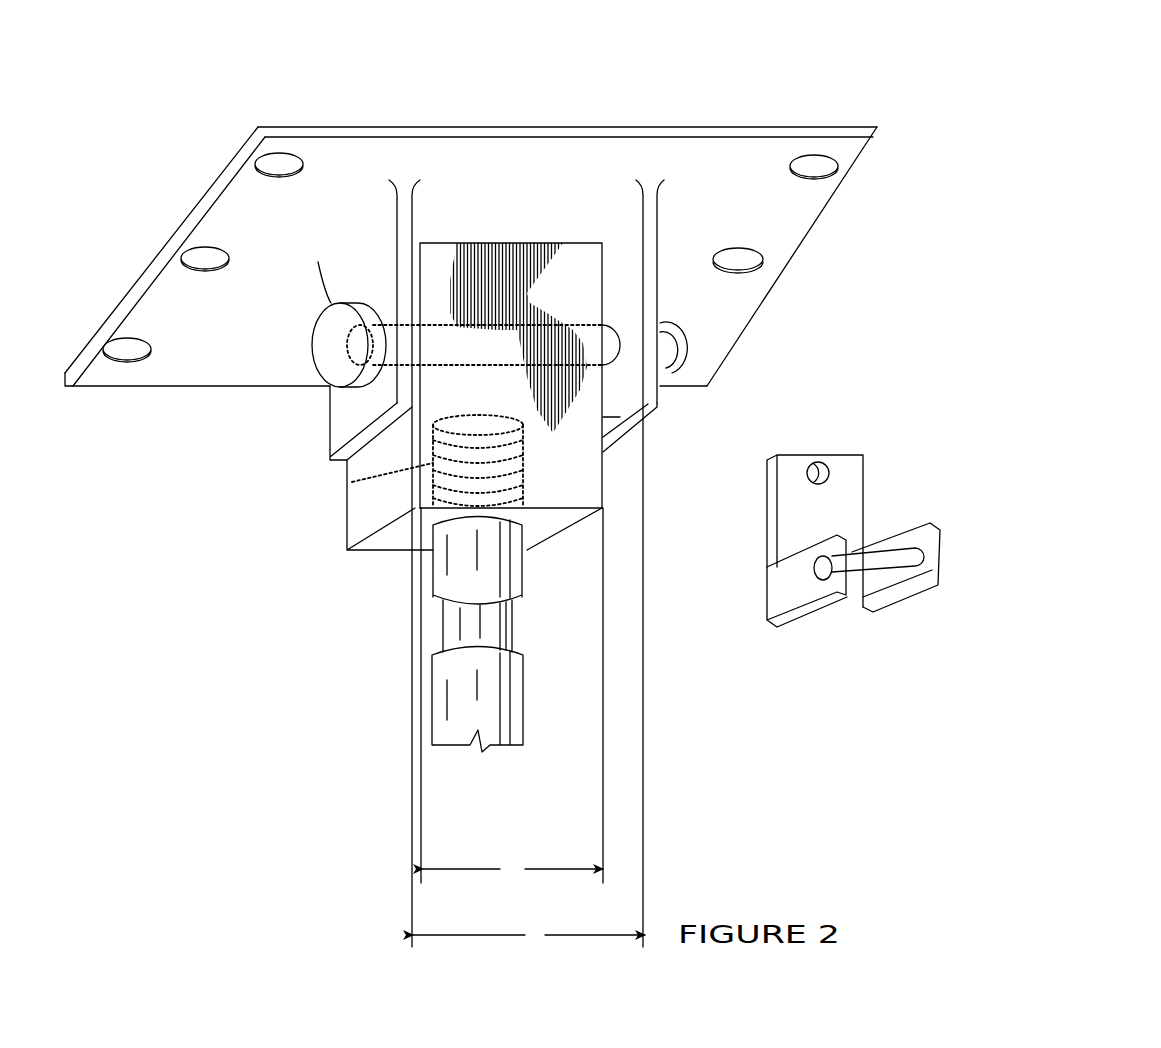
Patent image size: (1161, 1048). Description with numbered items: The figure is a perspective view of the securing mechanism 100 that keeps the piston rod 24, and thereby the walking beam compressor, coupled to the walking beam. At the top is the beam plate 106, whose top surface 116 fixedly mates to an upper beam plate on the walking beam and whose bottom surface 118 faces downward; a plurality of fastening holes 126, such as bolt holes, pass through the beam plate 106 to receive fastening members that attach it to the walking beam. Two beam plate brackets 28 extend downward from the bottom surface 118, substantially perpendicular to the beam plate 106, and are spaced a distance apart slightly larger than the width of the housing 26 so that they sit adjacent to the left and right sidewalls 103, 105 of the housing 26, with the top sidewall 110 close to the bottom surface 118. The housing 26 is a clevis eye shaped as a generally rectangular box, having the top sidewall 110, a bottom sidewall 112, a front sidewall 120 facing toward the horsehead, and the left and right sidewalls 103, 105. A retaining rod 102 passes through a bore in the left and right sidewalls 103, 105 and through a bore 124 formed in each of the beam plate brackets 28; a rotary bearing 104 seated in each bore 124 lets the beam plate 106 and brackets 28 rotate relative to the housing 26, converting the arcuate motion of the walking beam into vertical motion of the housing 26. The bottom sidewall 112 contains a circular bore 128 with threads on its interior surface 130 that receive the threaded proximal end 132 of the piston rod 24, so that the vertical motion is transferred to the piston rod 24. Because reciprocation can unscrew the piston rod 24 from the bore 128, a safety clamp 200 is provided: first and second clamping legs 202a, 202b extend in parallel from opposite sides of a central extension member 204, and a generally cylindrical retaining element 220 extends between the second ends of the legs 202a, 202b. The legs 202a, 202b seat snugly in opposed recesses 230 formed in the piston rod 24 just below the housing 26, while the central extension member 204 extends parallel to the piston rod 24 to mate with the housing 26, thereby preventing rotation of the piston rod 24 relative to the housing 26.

The securing mechanism 100 is at (753, 60).
The top surface 116 is at (628, 127).
The bottom surface 118 is at (217, 219).
The beam plate 106 is at (807, 252).
The fastening holes 126 is at (813, 162).
The housing 26 is at (292, 498).
The beam plate brackets 28 is at (375, 247).
The top sidewall 110 is at (538, 241).
The retaining rod 102 is at (565, 327).
The front sidewall 120 is at (583, 482).
The bore 124 is at (337, 345).
The rotary bearing 104 is at (327, 370).
The left sidewall 103 is at (358, 462).
The right sidewall 105 is at (640, 423).
The bottom sidewall 112 is at (387, 540).
The threaded proximal end 132 is at (352, 482).
The interior surface 130 is at (516, 446).
The circular bore 128 is at (442, 602).
The recesses 230 is at (434, 630).
The piston rod 24 is at (443, 710).
The safety clamp 200 is at (893, 488).
The central extension member 204 is at (853, 468).
The first clamping leg 202a is at (790, 595).
The second clamping leg 202b is at (903, 580).
The retaining element 220 is at (875, 563).